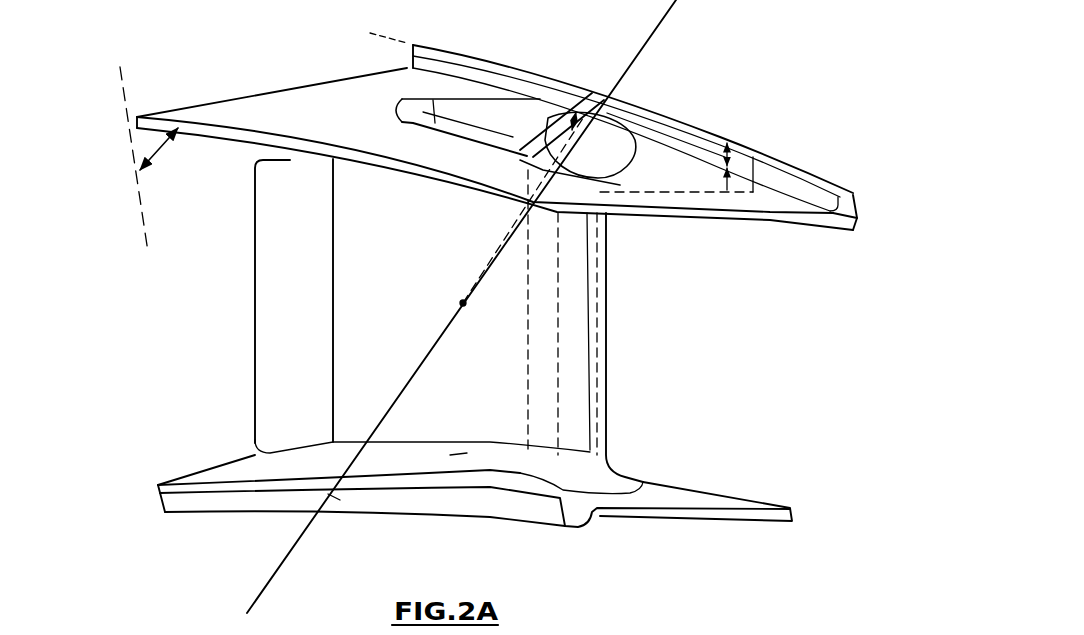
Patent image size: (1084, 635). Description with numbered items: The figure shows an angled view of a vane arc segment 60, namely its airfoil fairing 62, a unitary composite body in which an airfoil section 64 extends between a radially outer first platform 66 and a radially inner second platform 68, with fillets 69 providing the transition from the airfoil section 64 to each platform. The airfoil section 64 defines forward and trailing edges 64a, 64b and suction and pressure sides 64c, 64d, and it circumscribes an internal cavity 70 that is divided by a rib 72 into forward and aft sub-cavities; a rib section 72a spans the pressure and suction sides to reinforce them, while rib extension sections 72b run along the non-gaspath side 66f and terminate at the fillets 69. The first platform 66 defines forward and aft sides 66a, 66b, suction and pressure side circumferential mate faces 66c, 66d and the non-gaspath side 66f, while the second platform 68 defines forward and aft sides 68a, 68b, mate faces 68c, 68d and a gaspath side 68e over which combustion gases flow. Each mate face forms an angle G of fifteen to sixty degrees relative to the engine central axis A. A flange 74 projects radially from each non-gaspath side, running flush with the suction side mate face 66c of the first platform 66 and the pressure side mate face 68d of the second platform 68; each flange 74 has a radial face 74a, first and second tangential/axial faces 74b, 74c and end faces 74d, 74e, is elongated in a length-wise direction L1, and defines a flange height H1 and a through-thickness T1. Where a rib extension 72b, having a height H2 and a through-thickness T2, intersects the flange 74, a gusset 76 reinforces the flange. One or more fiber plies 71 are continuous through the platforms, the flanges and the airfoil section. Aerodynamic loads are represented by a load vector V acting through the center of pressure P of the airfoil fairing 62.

The vane arc segment 60 is at (138, 386).
The airfoil fairing 62 is at (645, 466).
The airfoil section 64 is at (248, 302).
The forward edge 64a is at (592, 373).
The trailing edge 64b is at (335, 360).
The suction side 64c is at (603, 300).
The pressure side 64d is at (377, 257).
The first platform 66 is at (718, 215).
The forward side 66a is at (790, 222).
The aft side 66b is at (197, 100).
The suction side circumferential mate face 66c is at (857, 221).
The pressure side circumferential mate face 66d is at (247, 138).
The non-gaspath side 66f is at (288, 100).
The second platform 68 is at (730, 517).
The forward side 68a is at (658, 505).
The aft side 68b is at (207, 465).
The suction side circumferential mate face 68c is at (727, 490).
The pressure side circumferential mate face 68d is at (240, 487).
The gaspath side 68e is at (668, 490).
The fillet 69 is at (457, 100).
The internal cavity 70 is at (492, 128).
The fiber ply 71 is at (685, 193).
The rib 72 is at (678, 136).
The rib section 72a is at (562, 258).
The rib extension section 72b is at (552, 156).
The flange 74 is at (787, 157).
The radial face 74a is at (618, 98).
The first tangential/axial face 74b is at (802, 190).
The second tangential/axial face 74c is at (858, 202).
The end face 74d is at (847, 222).
The end face 74e is at (413, 50).
The gusset 76 is at (578, 115).
The engine central axis A is at (142, 217).
The angle G is at (163, 150).
The flange height H1 is at (728, 133).
The rib extension height H2 is at (595, 77).
The length-wise direction L1 is at (378, 38).
The center of pressure P is at (460, 302).
The flange through-thickness T1 is at (706, 127).
The rib extension through-thickness T2 is at (522, 122).
The aerodynamic load vector V is at (397, 392).